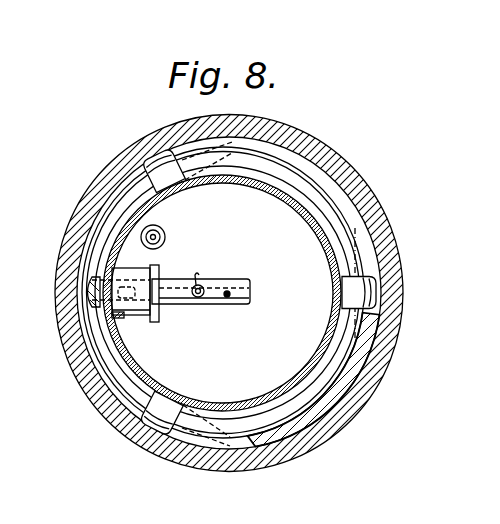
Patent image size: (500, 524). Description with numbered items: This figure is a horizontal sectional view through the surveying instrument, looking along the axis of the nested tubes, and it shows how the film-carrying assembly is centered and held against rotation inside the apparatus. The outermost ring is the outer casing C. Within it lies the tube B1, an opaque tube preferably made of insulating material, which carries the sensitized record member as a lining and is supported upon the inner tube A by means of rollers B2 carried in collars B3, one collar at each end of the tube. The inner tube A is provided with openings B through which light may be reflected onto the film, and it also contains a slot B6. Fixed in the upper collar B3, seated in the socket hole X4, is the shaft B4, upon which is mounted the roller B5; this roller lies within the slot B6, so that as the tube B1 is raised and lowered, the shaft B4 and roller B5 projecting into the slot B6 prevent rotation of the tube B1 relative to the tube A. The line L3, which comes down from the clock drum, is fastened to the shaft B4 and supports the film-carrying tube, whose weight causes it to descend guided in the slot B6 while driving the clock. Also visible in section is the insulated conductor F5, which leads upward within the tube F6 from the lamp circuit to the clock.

The openings B is at (7, 110).
The tube B1 is at (348, 195).
The rollers B2 is at (133, 470).
The collars B3 is at (313, 402).
The shaft B4 is at (243, 311).
The roller B5 is at (138, 320).
The slot B6 is at (114, 318).
The outer casing C is at (339, 198).
The tube A is at (262, 183).
The insulated conductor F5 is at (166, 237).
The tube F6 is at (163, 229).
The socket hole X4 is at (89, 287).
The line L3 is at (229, 291).